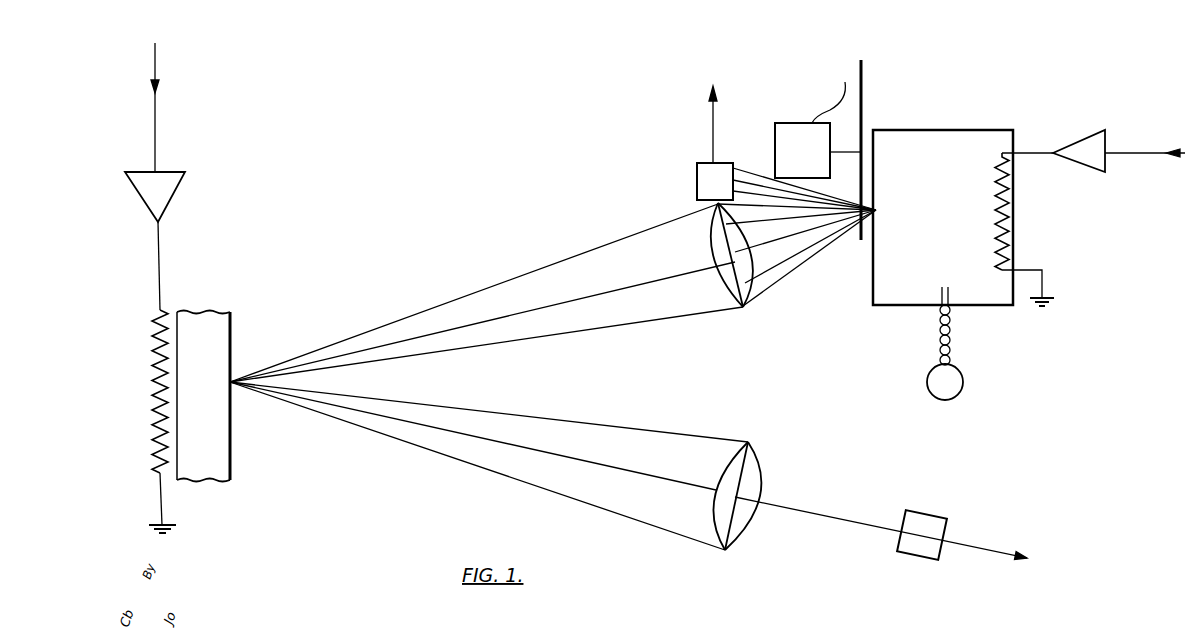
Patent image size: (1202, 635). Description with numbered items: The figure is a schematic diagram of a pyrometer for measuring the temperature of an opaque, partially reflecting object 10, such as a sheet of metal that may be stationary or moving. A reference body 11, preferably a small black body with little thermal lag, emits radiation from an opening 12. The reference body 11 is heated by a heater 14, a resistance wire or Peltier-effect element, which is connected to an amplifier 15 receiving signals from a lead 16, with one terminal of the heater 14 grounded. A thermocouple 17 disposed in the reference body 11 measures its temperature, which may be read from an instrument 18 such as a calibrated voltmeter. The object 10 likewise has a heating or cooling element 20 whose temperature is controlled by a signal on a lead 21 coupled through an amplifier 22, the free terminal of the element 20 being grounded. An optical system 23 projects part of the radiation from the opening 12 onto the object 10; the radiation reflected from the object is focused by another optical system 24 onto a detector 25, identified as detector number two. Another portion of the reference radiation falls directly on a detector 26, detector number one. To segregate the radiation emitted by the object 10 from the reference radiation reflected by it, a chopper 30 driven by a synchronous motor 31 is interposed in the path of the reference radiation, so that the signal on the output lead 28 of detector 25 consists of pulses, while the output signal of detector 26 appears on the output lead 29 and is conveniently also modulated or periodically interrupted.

The object 10 is at (226, 335).
The reference body 11 is at (966, 129).
The opening 12 is at (879, 215).
The heater 14 is at (1010, 223).
The amplifier 15 is at (1085, 130).
The lead 16 is at (1138, 153).
The thermocouple 17 is at (951, 297).
The instrument 18 is at (963, 380).
The heating or cooling element 20 is at (156, 377).
The lead 21 is at (157, 55).
The amplifier 22 is at (170, 202).
The optical system 23 is at (744, 307).
The optical system 24 is at (758, 463).
The detector 25 is at (937, 516).
The detector 26 is at (697, 196).
The output lead 28 is at (985, 547).
The output lead 29 is at (711, 106).
The chopper 30 is at (865, 98).
The synchronous motor 31 is at (775, 123).